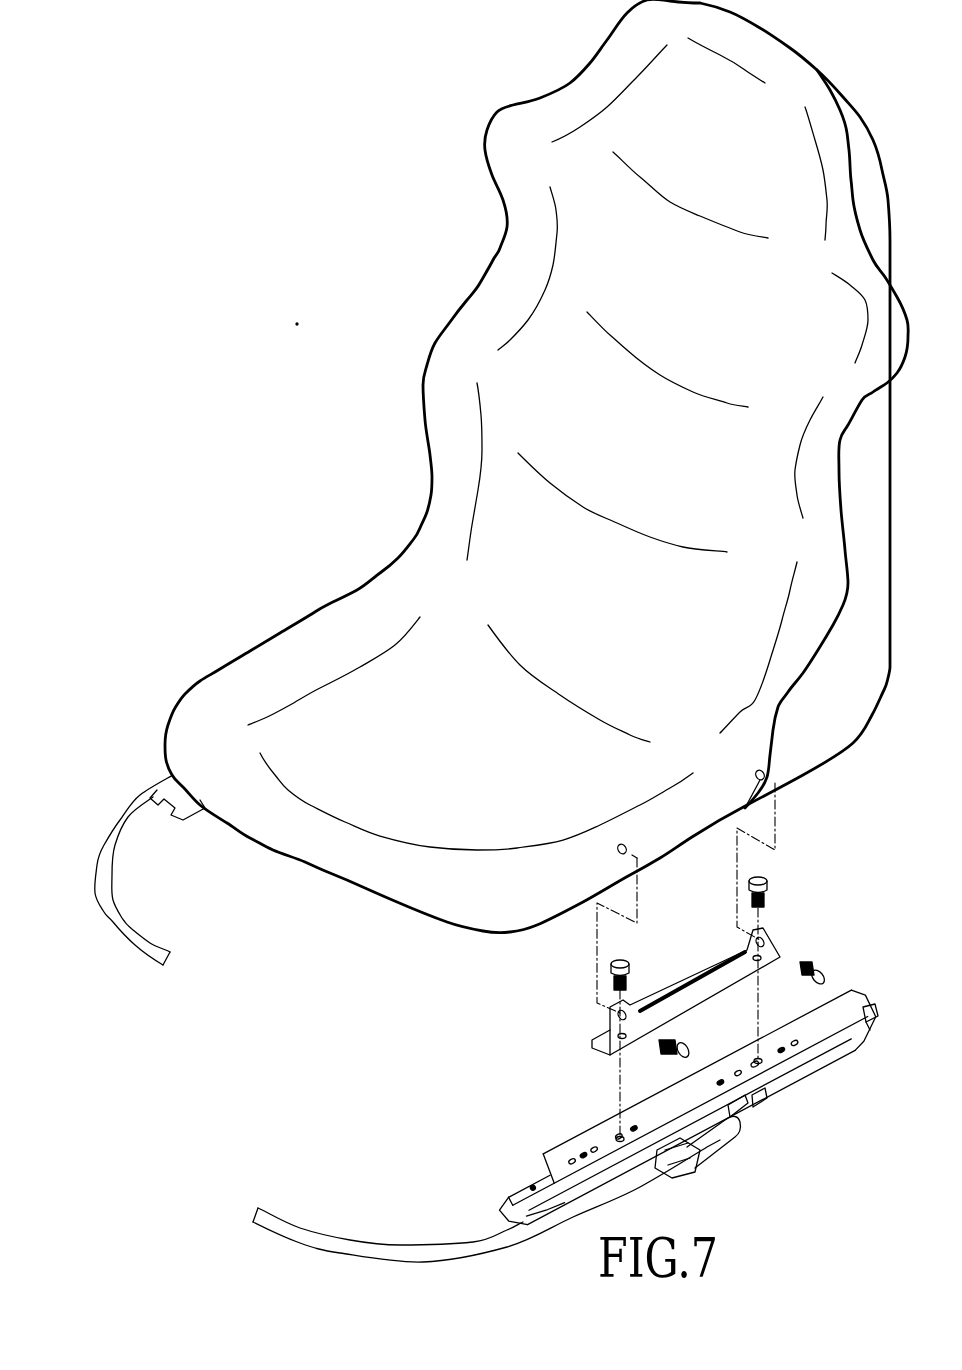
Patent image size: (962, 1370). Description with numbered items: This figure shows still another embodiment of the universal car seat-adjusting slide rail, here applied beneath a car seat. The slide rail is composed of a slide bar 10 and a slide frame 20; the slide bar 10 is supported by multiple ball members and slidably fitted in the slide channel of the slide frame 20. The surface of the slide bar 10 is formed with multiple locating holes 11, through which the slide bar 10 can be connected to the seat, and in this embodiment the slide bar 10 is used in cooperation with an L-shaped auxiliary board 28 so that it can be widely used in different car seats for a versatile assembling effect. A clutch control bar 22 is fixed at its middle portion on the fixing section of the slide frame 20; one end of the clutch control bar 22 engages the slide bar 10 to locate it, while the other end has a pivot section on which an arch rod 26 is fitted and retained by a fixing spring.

The slide bar 10 is at (873, 1002).
The locating holes 11 is at (758, 1057).
The slide frame 20 is at (807, 1078).
The clutch control bar 22 is at (717, 1145).
The arch rod 26 is at (440, 1255).
The L-shaped auxiliary board 28 is at (703, 983).